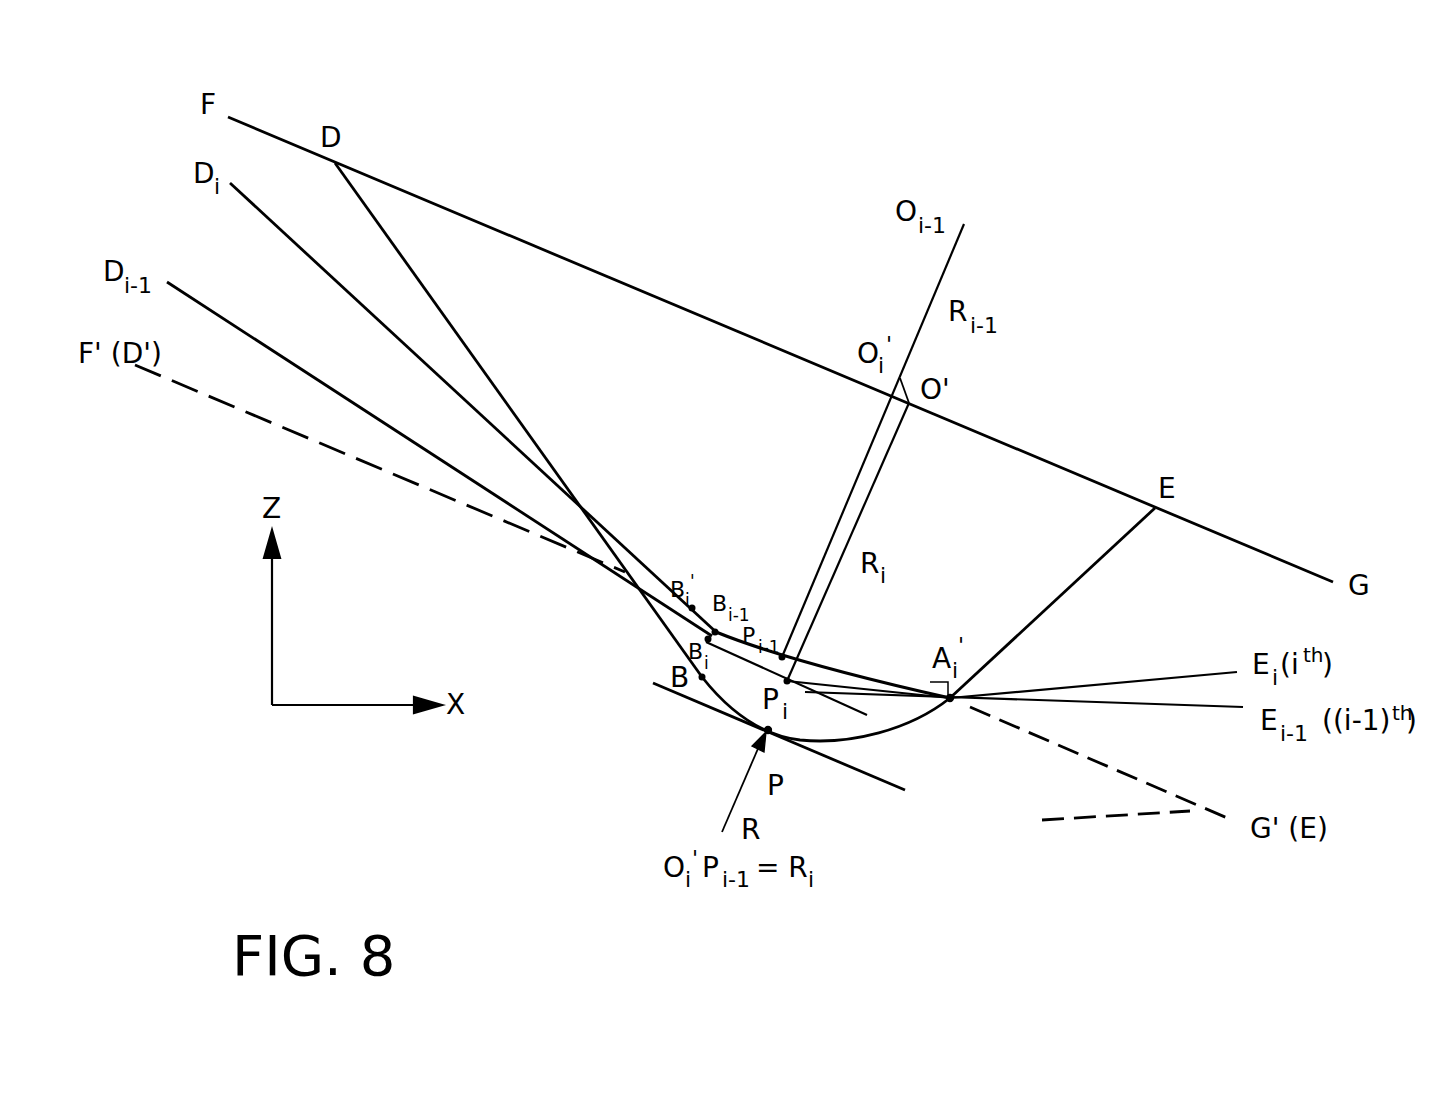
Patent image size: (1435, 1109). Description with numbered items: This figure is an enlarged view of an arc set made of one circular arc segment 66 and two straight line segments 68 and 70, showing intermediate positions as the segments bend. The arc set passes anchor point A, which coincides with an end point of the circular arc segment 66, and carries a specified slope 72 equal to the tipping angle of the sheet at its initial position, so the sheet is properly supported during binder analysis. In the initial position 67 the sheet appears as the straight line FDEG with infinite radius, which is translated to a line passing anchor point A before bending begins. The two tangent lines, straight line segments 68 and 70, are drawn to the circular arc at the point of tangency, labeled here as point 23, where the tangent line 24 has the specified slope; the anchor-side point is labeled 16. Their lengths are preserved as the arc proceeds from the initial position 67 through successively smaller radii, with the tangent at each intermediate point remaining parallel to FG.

The point A_i' on reflector 16 is at (950, 706).
The point P on reflector curve 23 is at (760, 732).
The tangent line at point P 24 is at (843, 766).
The circular arc segment 66 is at (893, 738).
The initial position 67 is at (1237, 541).
The straight line segment 68 is at (477, 355).
The straight line segment 70 is at (1063, 594).
The specified slope 72 is at (1138, 730).